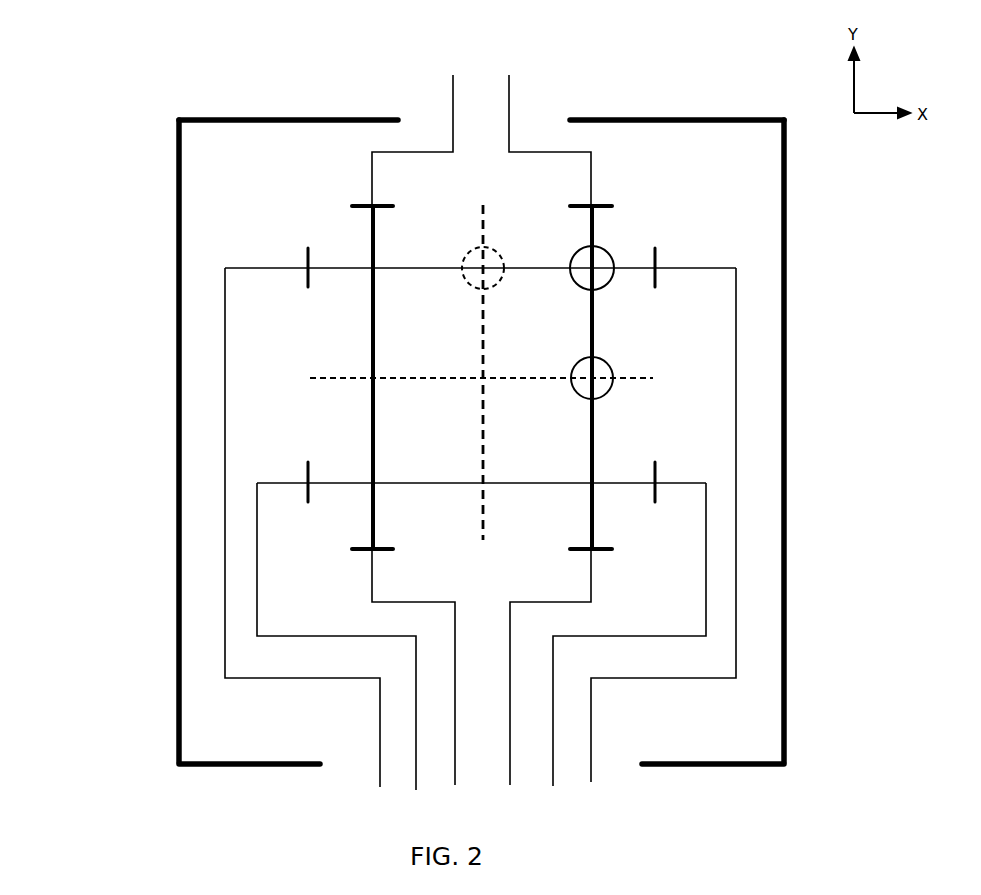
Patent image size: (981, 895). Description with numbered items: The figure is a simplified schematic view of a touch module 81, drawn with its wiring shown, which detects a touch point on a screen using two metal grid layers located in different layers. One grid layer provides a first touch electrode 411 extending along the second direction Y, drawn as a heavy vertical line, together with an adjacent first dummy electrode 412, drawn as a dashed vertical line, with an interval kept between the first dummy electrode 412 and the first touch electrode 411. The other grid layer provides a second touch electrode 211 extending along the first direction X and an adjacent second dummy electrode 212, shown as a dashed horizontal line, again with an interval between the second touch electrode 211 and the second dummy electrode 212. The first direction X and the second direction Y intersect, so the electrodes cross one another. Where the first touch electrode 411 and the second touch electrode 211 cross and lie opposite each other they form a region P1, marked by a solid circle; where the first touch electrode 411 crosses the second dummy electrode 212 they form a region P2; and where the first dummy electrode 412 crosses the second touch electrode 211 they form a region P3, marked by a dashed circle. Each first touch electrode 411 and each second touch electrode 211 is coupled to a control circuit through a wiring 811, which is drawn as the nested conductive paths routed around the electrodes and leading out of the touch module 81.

The touch module 81 is at (120, 63).
The wiring 811 is at (593, 167).
The second touch electrode 211 is at (347, 268).
The second dummy electrode 212 is at (350, 378).
The first touch electrode 411 is at (593, 433).
The first dummy electrode 412 is at (483, 540).
The region where first touch electrode and second touch electrode cross P1 is at (600, 260).
The region where first touch electrode and second dummy electrode cross P2 is at (600, 370).
The region where first dummy electrode and second touch electrode cross P3 is at (475, 263).